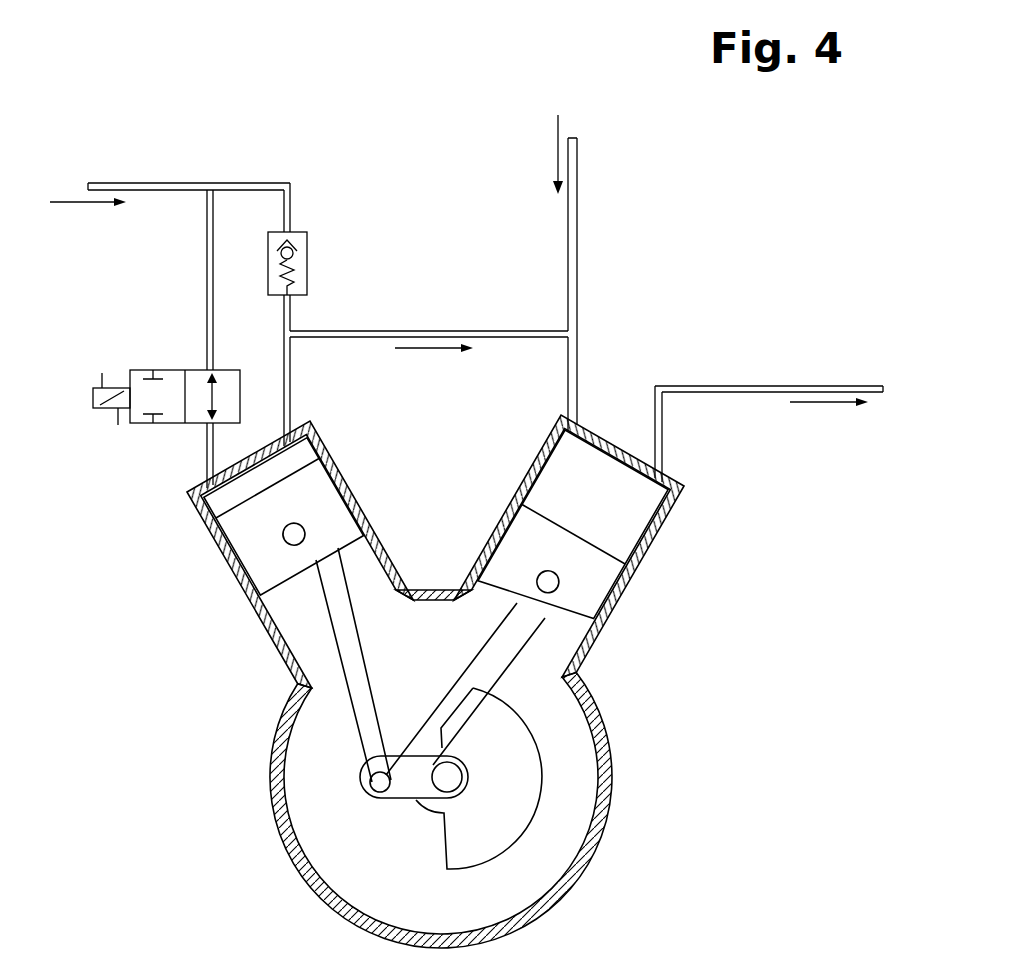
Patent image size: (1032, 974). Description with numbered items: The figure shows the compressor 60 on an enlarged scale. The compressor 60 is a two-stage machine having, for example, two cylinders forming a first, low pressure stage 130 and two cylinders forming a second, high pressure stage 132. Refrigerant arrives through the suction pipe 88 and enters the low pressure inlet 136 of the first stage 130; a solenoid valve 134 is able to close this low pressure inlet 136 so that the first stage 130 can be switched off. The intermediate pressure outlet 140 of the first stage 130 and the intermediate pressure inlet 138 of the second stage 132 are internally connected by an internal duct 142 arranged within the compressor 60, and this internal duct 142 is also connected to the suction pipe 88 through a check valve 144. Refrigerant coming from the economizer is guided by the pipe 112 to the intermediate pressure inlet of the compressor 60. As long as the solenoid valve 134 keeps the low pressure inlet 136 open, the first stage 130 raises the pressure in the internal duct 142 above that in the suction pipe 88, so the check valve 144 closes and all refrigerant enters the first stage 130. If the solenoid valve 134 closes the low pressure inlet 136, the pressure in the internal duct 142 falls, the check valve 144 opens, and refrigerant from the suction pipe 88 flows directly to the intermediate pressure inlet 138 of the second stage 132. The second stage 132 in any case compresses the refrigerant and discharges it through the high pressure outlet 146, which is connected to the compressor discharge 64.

The compressor 60 is at (602, 878).
The compressor discharge 64 is at (813, 385).
The suction pipe 88 is at (130, 186).
The pipe 112 is at (575, 213).
The first, low pressure stage 130 is at (228, 572).
The second high pressure stage 132 is at (651, 563).
The solenoid valve 134 is at (150, 370).
The low pressure inlet 136 is at (207, 487).
The intermediate pressure inlet 138 is at (560, 416).
The intermediate pressure outlet 140 is at (300, 418).
The internal duct 142 is at (488, 331).
The check valve 144 is at (310, 283).
The high pressure outlet 146 is at (665, 468).